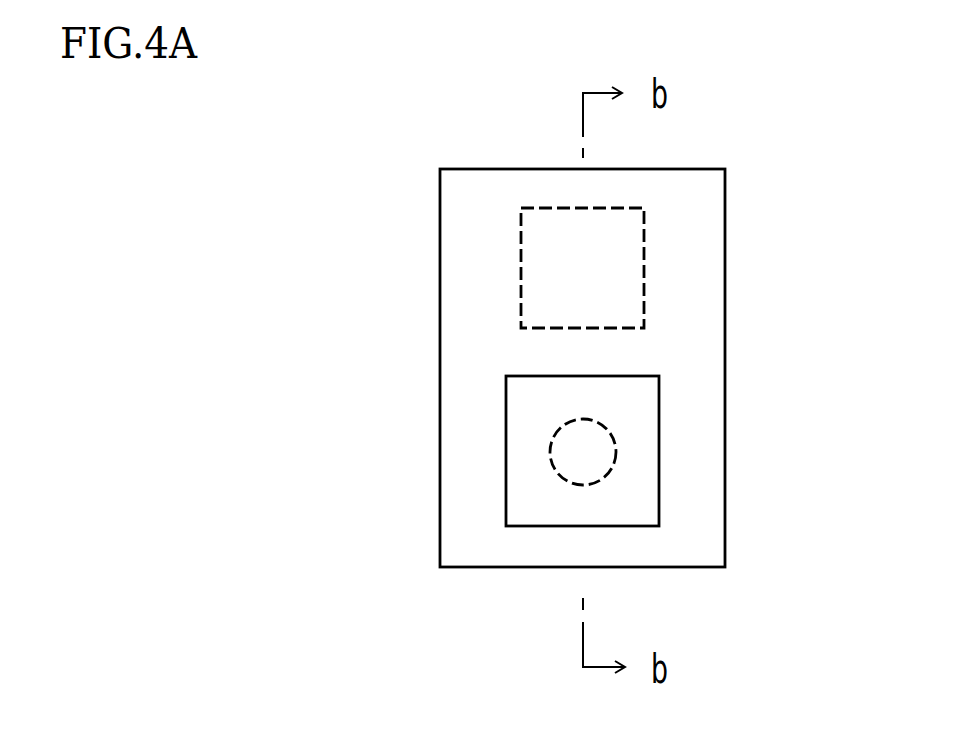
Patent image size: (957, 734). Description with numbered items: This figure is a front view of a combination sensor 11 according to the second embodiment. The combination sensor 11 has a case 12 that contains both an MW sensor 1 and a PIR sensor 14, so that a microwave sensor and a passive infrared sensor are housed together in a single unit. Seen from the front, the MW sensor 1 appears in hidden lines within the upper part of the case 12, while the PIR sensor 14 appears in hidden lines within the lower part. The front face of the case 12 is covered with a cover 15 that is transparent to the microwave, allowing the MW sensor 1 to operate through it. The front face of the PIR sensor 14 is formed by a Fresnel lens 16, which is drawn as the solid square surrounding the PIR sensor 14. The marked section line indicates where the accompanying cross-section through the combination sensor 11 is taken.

The combination sensor 11 is at (417, 132).
The case 12 is at (440, 327).
The MW sensor 1 is at (647, 280).
The cover 15 is at (672, 344).
The Fresnel lens 16 is at (659, 487).
The PIR sensor 14 is at (615, 450).